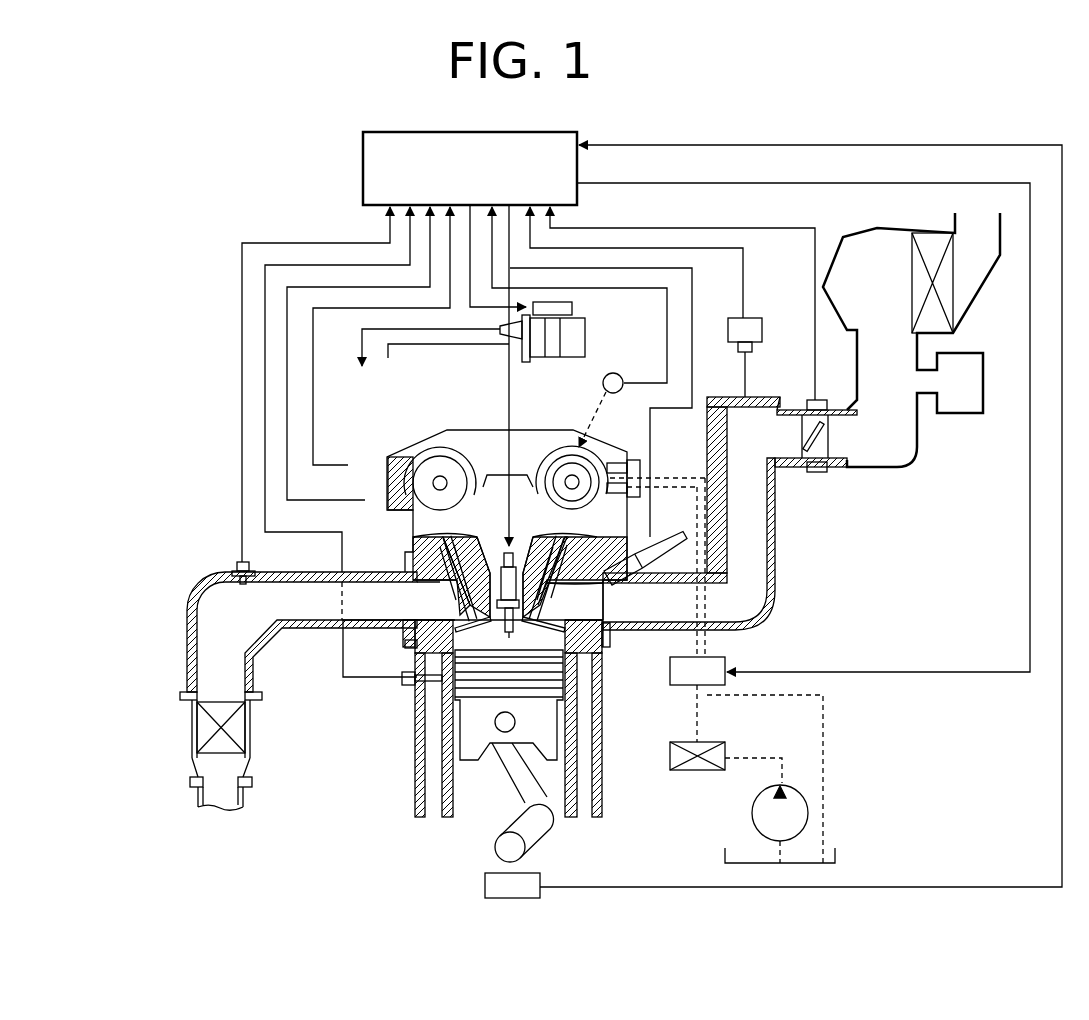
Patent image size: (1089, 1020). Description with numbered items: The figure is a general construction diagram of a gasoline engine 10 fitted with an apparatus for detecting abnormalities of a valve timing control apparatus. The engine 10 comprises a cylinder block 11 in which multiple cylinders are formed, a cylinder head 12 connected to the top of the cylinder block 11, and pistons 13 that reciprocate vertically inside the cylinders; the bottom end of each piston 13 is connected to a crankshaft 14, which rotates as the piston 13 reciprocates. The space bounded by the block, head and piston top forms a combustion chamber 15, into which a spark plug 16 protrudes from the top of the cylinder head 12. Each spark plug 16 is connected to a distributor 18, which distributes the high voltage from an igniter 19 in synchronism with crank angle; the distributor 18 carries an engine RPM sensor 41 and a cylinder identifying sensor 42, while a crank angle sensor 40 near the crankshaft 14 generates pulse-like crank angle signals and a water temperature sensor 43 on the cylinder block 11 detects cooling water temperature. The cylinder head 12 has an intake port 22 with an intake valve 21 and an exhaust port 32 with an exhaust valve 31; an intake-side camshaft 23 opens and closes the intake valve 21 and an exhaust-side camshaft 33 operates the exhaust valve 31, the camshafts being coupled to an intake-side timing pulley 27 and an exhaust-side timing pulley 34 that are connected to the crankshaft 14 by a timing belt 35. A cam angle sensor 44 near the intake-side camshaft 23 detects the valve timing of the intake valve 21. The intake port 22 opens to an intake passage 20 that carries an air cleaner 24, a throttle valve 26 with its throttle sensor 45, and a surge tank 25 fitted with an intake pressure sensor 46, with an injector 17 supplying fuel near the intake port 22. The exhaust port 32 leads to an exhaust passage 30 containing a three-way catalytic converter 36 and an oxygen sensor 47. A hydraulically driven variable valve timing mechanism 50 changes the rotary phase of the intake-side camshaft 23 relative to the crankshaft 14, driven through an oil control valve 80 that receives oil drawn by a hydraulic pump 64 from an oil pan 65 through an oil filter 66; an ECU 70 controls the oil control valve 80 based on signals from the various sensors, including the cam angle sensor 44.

The gasoline engine 10 is at (528, 629).
The cylinder block 11 is at (605, 817).
The cylinder head 12 is at (532, 510).
The piston 13 is at (490, 745).
The crankshaft 14 is at (526, 852).
The combustion chamber 15 is at (548, 650).
The spark plug 16 is at (517, 563).
The injector 17 is at (683, 534).
The distributor 18 is at (233, 242).
The igniter 19 is at (585, 328).
The intake passage 20 is at (775, 562).
The intake valve 21 is at (552, 598).
The intake port 22 is at (603, 580).
The intake-side camshaft 23 is at (632, 467).
The air cleaner 24 is at (913, 283).
The surge tank 25 is at (716, 440).
The throttle valve 26 is at (823, 427).
The intake-side timing pulley 27 is at (593, 453).
The exhaust passage 30 is at (305, 630).
The exhaust valve 31 is at (410, 640).
The exhaust port 32 is at (418, 588).
The exhaust-side camshaft 33 is at (445, 517).
The exhaust-side timing pulley 34 is at (445, 453).
The timing belt 35 is at (535, 453).
The three-way catalytic converter 36 is at (250, 732).
The crank angle sensor 40 is at (484, 885).
The engine RPM sensor 41 is at (358, 475).
The cylinder identifying sensor 42 is at (368, 510).
The water temperature sensor 43 is at (407, 690).
The cam angle sensor 44 is at (628, 357).
The throttle sensor 45 is at (808, 402).
The intake pressure sensor 46 is at (767, 327).
The oxygen sensor 47 is at (240, 560).
The variable valve timing mechanism 50 is at (582, 406).
The hydraulic pump 64 is at (752, 826).
The oil pan 65 is at (837, 853).
The oil filter 66 is at (680, 770).
The ECU 70 is at (363, 172).
The oil control valve 80 is at (730, 657).